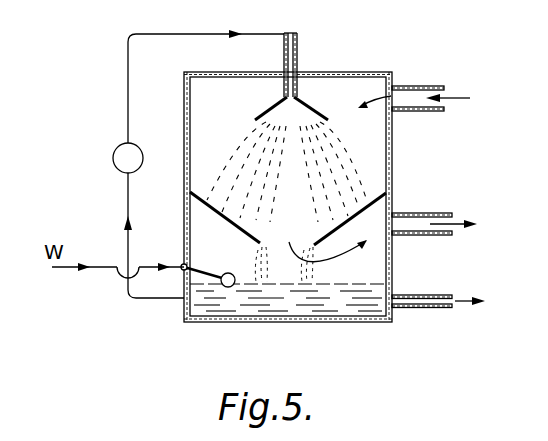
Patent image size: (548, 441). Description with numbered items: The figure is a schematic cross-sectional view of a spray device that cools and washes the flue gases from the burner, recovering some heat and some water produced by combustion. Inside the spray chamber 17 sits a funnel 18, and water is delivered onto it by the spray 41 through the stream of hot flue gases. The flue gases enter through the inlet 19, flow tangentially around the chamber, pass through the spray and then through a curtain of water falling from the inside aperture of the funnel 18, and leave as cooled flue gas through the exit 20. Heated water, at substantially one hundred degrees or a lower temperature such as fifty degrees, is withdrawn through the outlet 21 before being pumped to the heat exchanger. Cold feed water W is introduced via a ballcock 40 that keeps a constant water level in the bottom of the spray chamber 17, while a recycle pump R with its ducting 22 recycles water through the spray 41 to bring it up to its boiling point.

The spray chamber 17 is at (392, 152).
The funnel 18 is at (384, 192).
The inlet 19 is at (415, 86).
The exit 20 is at (443, 237).
The outlet 21 is at (441, 310).
The ducting 22 is at (128, 78).
The ballcock 40 is at (226, 273).
The spray 41 is at (308, 108).